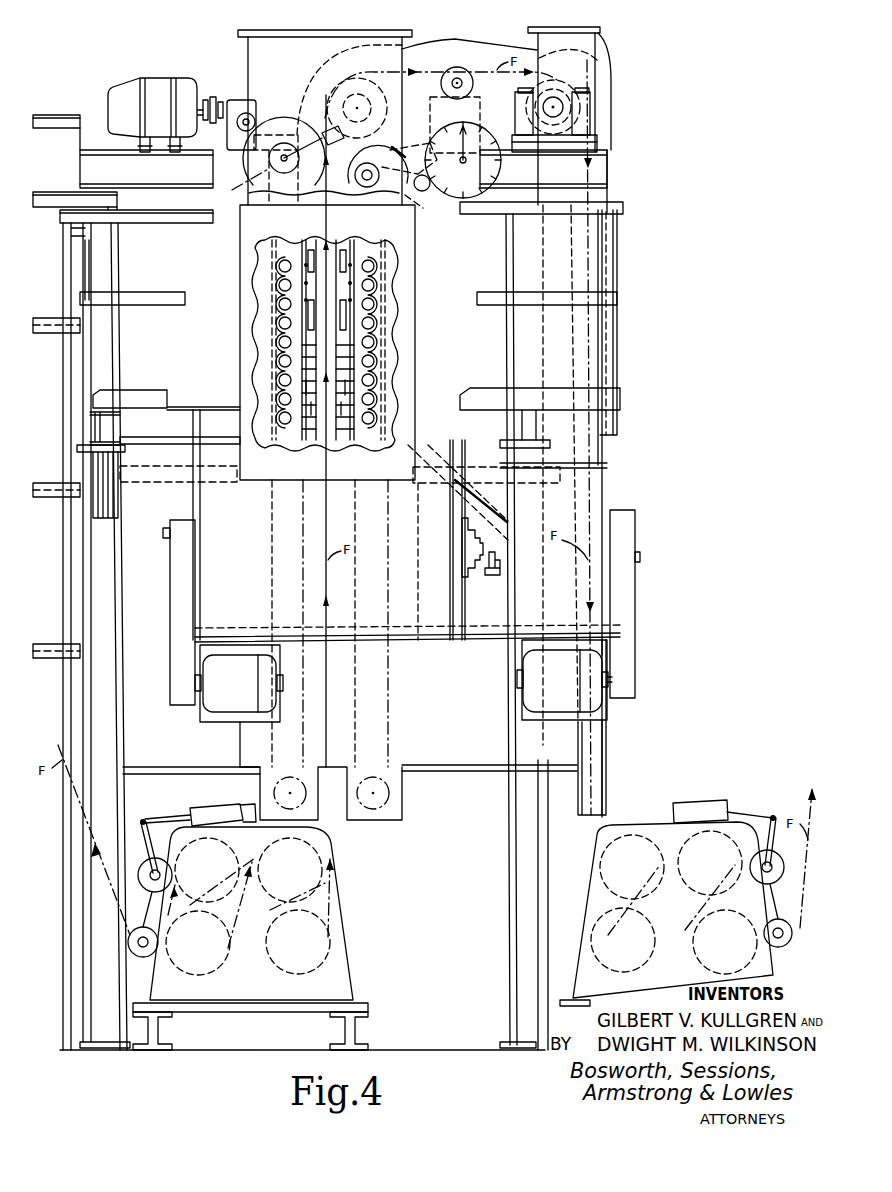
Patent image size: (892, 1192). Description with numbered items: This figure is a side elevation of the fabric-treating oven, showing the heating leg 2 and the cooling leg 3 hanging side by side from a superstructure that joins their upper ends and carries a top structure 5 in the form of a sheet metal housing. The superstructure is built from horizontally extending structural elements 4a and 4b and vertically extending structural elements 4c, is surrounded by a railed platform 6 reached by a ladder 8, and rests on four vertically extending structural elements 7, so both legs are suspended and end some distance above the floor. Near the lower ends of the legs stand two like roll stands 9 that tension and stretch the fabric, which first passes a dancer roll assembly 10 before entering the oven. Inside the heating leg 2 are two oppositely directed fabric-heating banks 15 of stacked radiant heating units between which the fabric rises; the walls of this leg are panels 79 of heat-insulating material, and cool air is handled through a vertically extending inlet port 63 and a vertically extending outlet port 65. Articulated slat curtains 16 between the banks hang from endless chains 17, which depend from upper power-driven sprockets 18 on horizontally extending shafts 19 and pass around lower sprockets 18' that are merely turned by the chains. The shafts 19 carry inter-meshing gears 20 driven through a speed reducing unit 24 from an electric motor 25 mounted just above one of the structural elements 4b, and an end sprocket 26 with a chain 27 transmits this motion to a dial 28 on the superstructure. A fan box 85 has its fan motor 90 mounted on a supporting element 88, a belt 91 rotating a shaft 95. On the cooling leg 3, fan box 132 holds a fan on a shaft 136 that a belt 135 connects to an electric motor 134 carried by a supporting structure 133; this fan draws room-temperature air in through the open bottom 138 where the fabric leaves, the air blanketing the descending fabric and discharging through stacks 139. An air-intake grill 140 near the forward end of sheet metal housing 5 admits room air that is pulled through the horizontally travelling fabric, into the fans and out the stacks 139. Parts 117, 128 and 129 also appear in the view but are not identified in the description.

The heating leg 2 is at (242, 733).
The cooling leg 3 is at (606, 744).
The horizontally extending structural elements 4a is at (101, 432).
The horizontally extending structural elements 4b is at (82, 172).
The vertically extending structural elements 4c is at (119, 275).
The top structure 5 is at (463, 38).
The railed platform 6 is at (88, 296).
The vertically extending structural elements 7 is at (122, 656).
The ladder 8 is at (63, 880).
The roll stands 9 is at (343, 940).
The dancer roll assembly 10 is at (56, 116).
The fabric-heating banks 15 is at (286, 248).
The articulated slat curtains 16 is at (309, 243).
The endless chains 17 is at (271, 256).
The upper power-driven sprocket 18 is at (378, 160).
The lower sprockets 18' is at (321, 808).
The horizontally extending shaft 19 is at (330, 191).
The inter-meshing gears 20 is at (316, 136).
The speed reducing unit 24 is at (240, 98).
The electric motor 25 is at (131, 78).
The end sprocket 26 is at (409, 167).
The chain 27 is at (437, 140).
The dial 28 is at (480, 128).
The inlet port 63 is at (314, 356).
The outlet port 65 is at (345, 356).
The panels of heat-insulating material 79 is at (415, 322).
The fan box 85 is at (460, 630).
The supporting element 88 is at (208, 644).
The motor 90 is at (225, 705).
The belt 91 is at (172, 668).
The shaft 95 is at (165, 538).
The hopper 117 is at (318, 36).
The roll 128 is at (378, 80).
The roll 129 is at (590, 60).
The fan box 132 is at (603, 470).
The supporting structure 133 is at (603, 640).
The electric motor 134 is at (557, 705).
The belt 135 is at (628, 655).
The shaft 136 is at (640, 552).
The opening 138 is at (590, 828).
The stacks 139 is at (578, 27).
The air-intake grill 140 is at (295, 130).